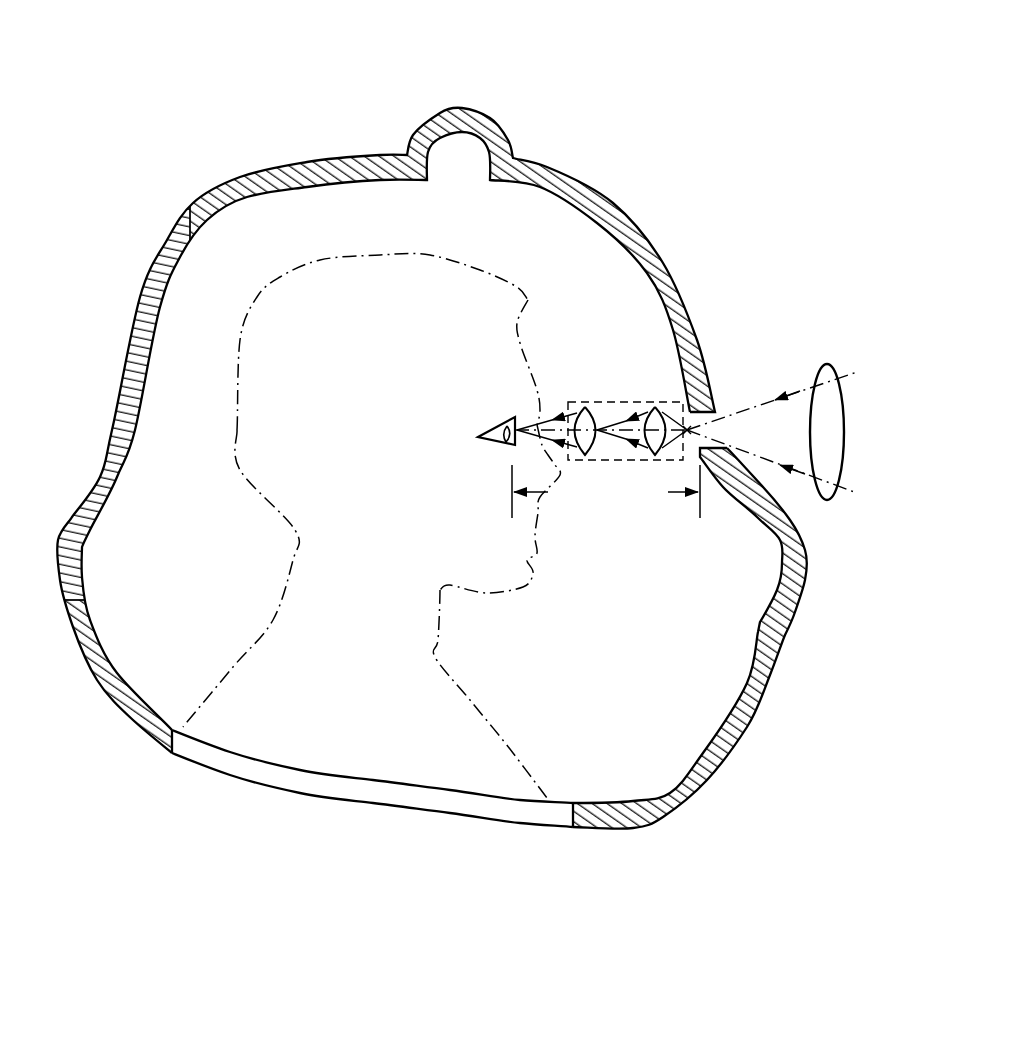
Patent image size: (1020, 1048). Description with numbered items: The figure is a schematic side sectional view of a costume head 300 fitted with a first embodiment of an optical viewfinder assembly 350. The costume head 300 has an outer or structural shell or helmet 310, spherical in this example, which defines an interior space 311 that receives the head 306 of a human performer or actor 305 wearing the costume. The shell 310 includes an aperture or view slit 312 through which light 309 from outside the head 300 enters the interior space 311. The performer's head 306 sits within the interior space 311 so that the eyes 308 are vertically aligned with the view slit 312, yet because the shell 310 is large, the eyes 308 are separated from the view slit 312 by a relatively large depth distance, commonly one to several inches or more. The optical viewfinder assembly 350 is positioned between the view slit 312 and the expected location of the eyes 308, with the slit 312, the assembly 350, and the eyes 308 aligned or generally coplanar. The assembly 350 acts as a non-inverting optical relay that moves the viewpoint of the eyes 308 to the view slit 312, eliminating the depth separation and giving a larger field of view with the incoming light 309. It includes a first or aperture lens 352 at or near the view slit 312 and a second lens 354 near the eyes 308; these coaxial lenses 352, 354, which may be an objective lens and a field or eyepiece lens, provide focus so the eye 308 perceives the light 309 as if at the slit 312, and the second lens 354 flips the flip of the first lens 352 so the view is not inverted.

The costume head 300 is at (156, 99).
The human performer/actor 305 is at (238, 451).
The head of the performer 306 is at (247, 318).
The eyes 308 is at (518, 415).
The light 309 is at (826, 363).
The outer or structural shell or helmet 310 is at (164, 234).
The interior space 311 is at (317, 206).
The view slit 312 is at (733, 444).
The optical viewfinder assembly 350 is at (609, 396).
The first or aperture lens 352 is at (663, 406).
The second lens 354 is at (605, 408).